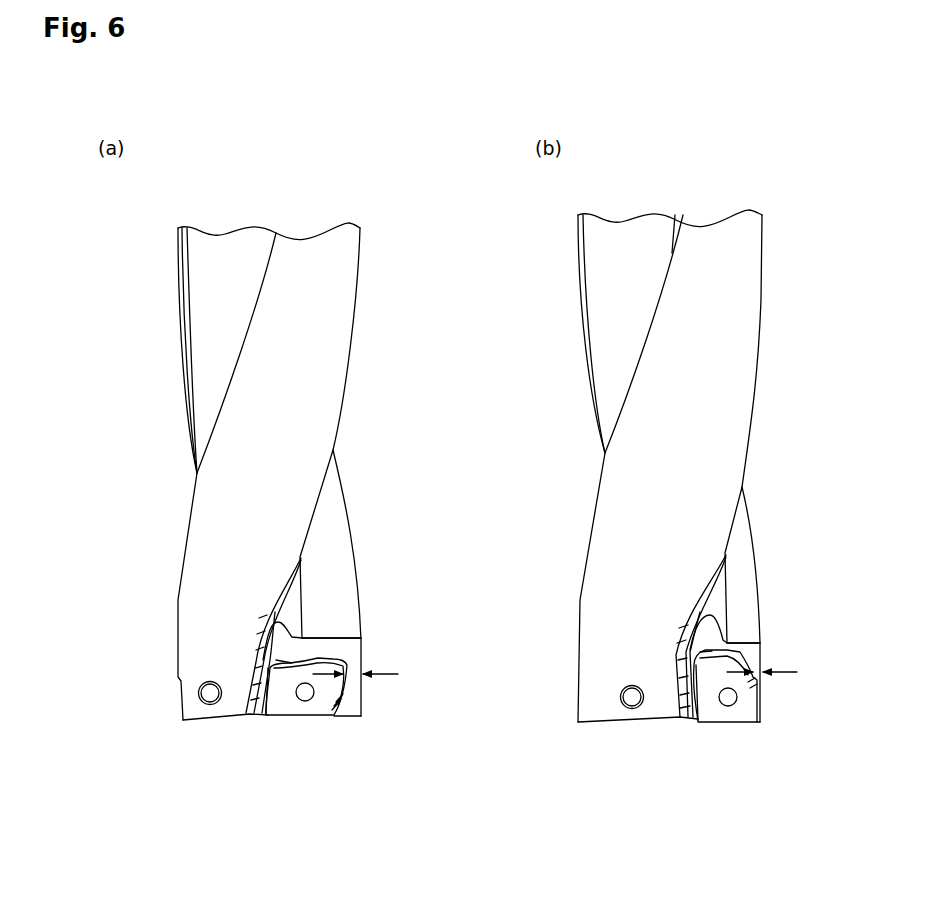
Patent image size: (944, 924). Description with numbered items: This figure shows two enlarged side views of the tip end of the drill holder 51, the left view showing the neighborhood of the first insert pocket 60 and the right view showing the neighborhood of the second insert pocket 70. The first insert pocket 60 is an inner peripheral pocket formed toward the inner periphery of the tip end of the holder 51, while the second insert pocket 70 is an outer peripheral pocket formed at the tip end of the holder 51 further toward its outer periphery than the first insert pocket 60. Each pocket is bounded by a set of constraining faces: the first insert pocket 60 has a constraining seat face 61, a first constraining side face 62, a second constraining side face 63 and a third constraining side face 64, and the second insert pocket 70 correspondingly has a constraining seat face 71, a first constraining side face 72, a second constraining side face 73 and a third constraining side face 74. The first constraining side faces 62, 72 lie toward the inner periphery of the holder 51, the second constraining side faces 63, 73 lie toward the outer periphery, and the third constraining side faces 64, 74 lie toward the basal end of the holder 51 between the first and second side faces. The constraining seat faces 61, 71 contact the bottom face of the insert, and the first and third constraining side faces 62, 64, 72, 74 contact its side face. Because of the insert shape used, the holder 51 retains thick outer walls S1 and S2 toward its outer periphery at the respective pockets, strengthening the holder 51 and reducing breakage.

The holder 51 is at (315, 323).
The first insert pocket 60 is at (320, 650).
The constraining seat face 61 is at (300, 710).
The first constraining side face 62 is at (280, 717).
The second constraining side face 63 is at (322, 717).
The third constraining side face 64 is at (275, 659).
The outer wall S1 is at (358, 655).
The second insert pocket 70 is at (738, 652).
The constraining seat face 71 is at (740, 713).
The first constraining side face 72 is at (713, 723).
The second constraining side face 73 is at (752, 687).
The third constraining side face 74 is at (683, 671).
The outer wall S2 is at (762, 650).